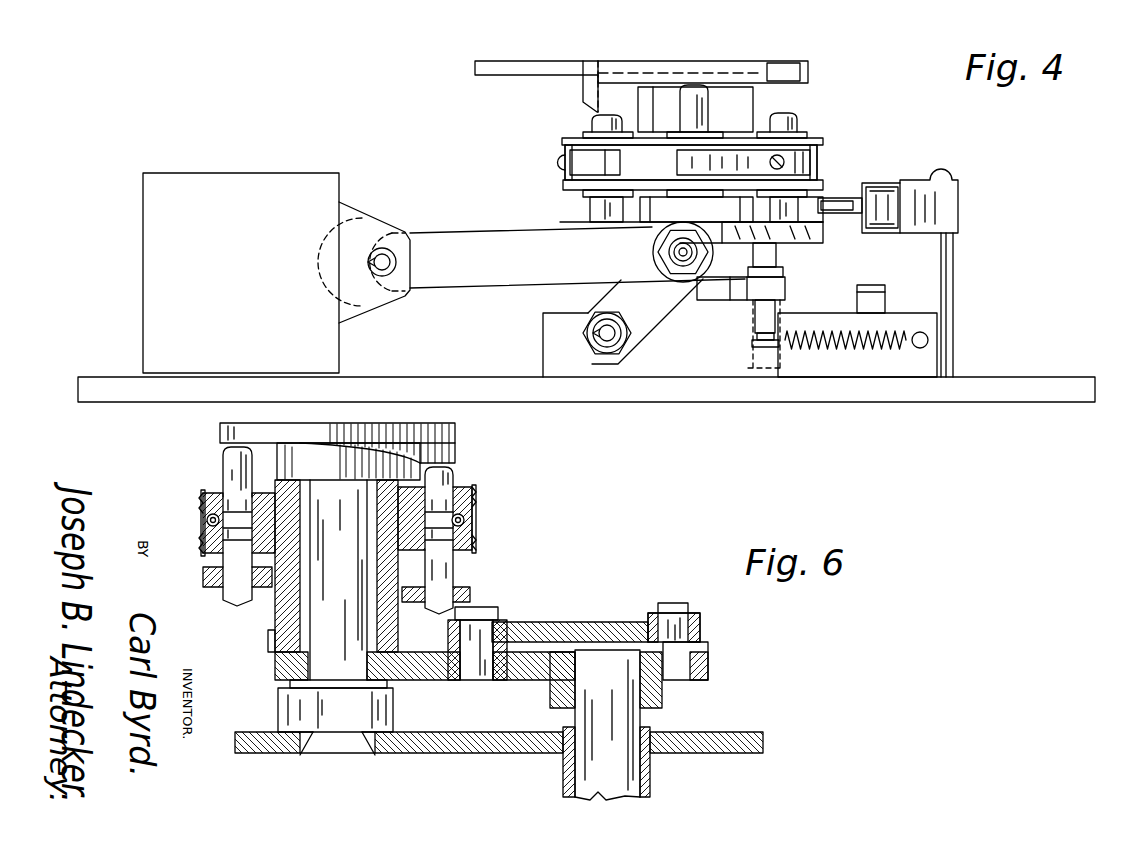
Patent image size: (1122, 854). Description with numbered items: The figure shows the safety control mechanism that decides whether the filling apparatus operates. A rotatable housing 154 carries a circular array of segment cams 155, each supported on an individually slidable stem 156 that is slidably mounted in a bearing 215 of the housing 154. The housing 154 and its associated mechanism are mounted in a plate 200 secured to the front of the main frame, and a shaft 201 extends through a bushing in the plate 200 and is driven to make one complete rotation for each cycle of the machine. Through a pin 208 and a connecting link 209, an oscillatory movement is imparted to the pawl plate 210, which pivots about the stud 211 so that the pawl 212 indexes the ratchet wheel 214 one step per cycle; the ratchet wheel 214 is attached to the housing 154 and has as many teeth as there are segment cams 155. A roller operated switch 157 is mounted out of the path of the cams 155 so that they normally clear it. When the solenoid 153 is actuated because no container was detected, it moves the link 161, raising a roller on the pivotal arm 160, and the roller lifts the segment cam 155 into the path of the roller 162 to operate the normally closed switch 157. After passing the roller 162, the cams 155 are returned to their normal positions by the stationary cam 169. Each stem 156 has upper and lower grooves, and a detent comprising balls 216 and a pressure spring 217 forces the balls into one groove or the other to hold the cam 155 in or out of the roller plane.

In FIG. 4, the solenoid 153 is at (247, 181).
In FIG. 4, the rotatable housing 154 is at (821, 141).
In FIG. 6, the rotatable housing 154 is at (205, 549).
In FIG. 4, the segment cam 155 is at (818, 246).
In FIG. 6, the segment cam 155 is at (208, 589).
In FIG. 4, the stem 156 is at (596, 123).
In FIG. 6, the stem 156 is at (226, 457).
In FIG. 4, the roller operated switch 157 is at (959, 214).
In FIG. 4, the pivotal arm 160 is at (639, 322).
In FIG. 4, the link 161 is at (488, 276).
In FIG. 4, the roller 162 is at (838, 197).
In FIG. 4, the stationary cam 169 is at (588, 88).
In FIG. 6, the stationary cam 169 is at (456, 441).
In FIG. 4, the plate 200 is at (908, 385).
In FIG. 6, the plate 200 is at (738, 735).
In FIG. 6, the shaft 201 is at (630, 798).
In FIG. 6, the pin 208 is at (679, 603).
In FIG. 6, the connecting link 209 is at (578, 626).
In FIG. 6, the pawl plate 210 is at (444, 677).
In FIG. 6, the stud 211 is at (340, 654).
In FIG. 6, the pawl 212 is at (651, 769).
In FIG. 6, the ratchet wheel 214 is at (268, 650).
In FIG. 4, the bearing 215 is at (808, 134).
In FIG. 6, the bearing 215 is at (472, 495).
In FIG. 6, the ball 216 is at (207, 524).
In FIG. 4, the pressure spring 217 is at (584, 165).
In FIG. 6, the pressure spring 217 is at (209, 512).